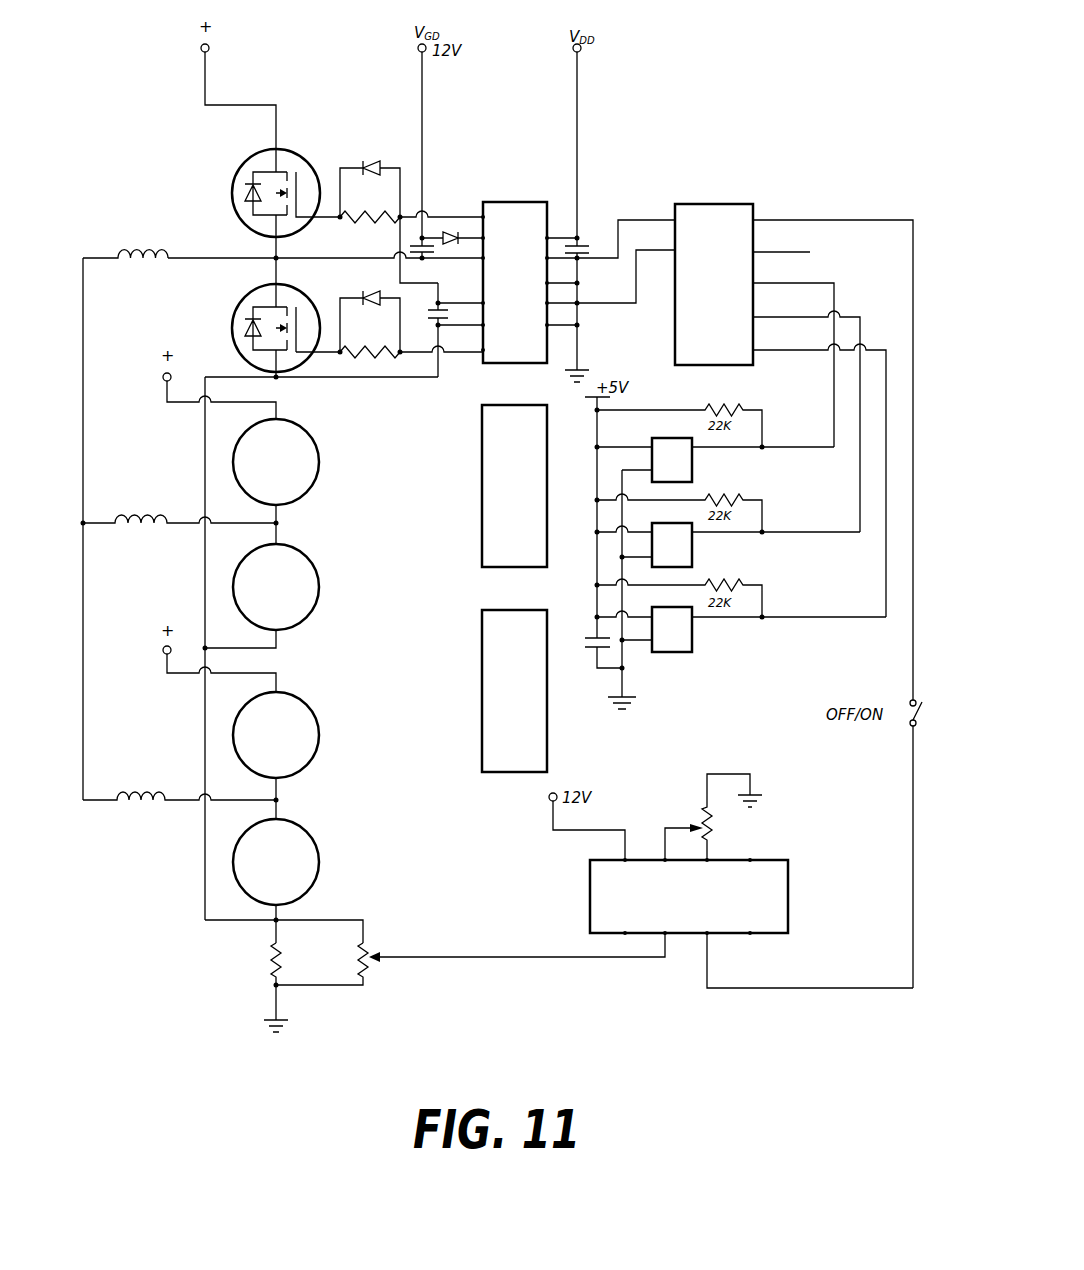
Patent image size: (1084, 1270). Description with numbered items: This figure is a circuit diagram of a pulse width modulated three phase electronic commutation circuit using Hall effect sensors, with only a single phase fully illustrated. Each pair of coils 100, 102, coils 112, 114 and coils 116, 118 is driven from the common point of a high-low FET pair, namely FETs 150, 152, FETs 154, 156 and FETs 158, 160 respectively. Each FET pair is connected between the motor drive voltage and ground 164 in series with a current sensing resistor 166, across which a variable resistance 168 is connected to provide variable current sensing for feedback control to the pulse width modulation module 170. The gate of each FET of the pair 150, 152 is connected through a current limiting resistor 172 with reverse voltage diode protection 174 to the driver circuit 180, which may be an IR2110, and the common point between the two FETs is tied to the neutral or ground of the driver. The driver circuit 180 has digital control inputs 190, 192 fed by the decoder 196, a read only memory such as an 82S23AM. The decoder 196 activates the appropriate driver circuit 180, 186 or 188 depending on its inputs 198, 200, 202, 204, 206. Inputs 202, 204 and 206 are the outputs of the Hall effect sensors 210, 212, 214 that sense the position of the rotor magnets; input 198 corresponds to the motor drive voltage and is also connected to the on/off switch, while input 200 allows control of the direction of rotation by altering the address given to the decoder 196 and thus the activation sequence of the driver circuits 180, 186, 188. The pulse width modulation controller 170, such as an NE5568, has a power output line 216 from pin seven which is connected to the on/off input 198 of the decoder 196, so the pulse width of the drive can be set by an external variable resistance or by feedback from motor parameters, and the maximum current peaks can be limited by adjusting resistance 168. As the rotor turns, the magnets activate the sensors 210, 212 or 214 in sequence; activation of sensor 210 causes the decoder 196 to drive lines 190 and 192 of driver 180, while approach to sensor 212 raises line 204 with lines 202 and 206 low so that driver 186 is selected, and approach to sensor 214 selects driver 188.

The coil 100 is at (140, 221).
The coil 102 is at (189, 199).
The coil 112 is at (179, 495).
The coil 114 is at (186, 478).
The coil 116 is at (179, 763).
The coil 118 is at (186, 738).
The high FET 150 is at (288, 152).
The low FET 152 is at (235, 341).
The high FET 154 is at (304, 432).
The low FET 156 is at (304, 560).
The high FET 158 is at (305, 703).
The low FET 160 is at (307, 834).
The ground 164 is at (280, 1003).
The current sensing resistor 166 is at (268, 958).
The variable resistance 168 is at (372, 944).
The pulse width modulation module 170 is at (590, 880).
The current limiting resistor 172 is at (372, 228).
The reverse voltage diode protection 174 is at (393, 162).
The driver circuit 180 is at (503, 202).
The driver circuit 186 is at (482, 458).
The driver circuit 188 is at (482, 662).
The digital control input 190 is at (640, 220).
The digital control input 192 is at (600, 303).
The decoder 196 is at (710, 204).
The on/off input 198 is at (782, 220).
The direction input 200 is at (790, 252).
The Hall effect sensor input 202 is at (813, 283).
The Hall effect sensor input 204 is at (882, 304).
The Hall effect sensor input 206 is at (792, 353).
The Hall effect sensor 210 is at (680, 463).
The Hall effect sensor 212 is at (680, 553).
The Hall effect sensor 214 is at (680, 648).
The power output line 216 is at (750, 988).